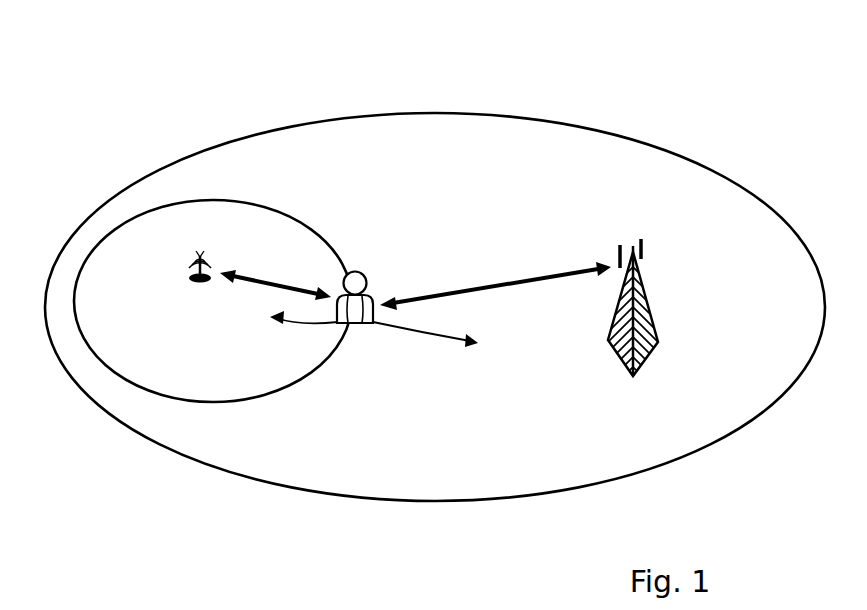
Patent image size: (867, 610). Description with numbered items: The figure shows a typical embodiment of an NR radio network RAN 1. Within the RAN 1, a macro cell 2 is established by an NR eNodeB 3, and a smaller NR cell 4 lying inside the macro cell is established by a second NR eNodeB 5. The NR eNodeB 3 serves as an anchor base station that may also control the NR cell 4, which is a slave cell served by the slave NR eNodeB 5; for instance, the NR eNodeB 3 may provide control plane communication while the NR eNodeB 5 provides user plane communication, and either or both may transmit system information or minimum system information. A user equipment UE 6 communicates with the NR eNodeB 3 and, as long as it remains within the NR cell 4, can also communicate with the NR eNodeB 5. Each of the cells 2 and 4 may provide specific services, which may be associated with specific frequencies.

The NR radio network RAN 1 is at (548, 78).
The macro cell 2 is at (424, 112).
The NR eNodeB 3 is at (645, 292).
The NR cell 4 is at (287, 213).
The NR eNodeB 5 is at (217, 257).
The user equipment UE 6 is at (362, 272).